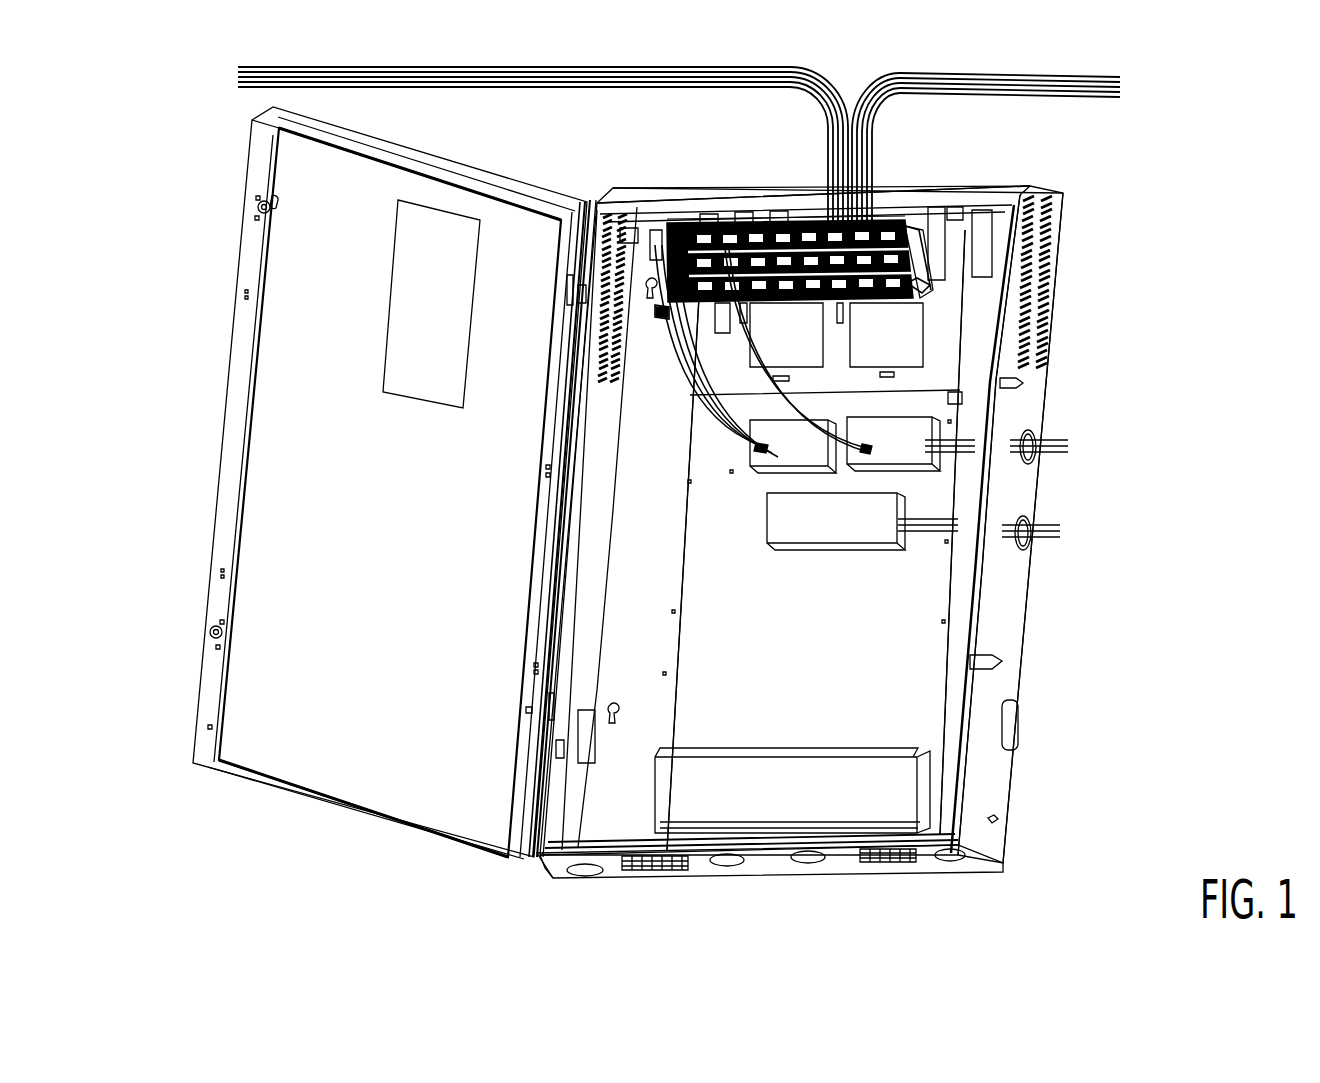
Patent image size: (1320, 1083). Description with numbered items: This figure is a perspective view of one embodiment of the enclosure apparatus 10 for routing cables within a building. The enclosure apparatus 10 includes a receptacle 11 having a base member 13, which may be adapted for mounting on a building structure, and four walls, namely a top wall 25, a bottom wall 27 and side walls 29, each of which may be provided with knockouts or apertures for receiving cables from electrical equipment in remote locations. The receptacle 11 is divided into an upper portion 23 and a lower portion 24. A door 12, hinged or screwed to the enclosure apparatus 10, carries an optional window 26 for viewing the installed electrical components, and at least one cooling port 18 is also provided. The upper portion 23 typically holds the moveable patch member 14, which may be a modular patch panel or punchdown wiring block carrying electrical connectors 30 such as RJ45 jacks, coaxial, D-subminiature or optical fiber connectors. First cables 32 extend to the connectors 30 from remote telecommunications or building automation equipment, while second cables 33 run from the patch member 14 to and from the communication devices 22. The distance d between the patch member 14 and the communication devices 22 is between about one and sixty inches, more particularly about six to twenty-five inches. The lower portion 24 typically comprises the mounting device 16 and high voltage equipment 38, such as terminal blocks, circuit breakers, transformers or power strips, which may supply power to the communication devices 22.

The enclosure apparatus 10 is at (1090, 191).
The receptacle 11 is at (528, 873).
The door 12 is at (322, 470).
The base member 13 is at (578, 640).
The moveable patch member 14 is at (917, 267).
The mounting device 16 is at (715, 492).
The cooling port 18 is at (920, 870).
The communication devices 22 is at (905, 450).
The upper portion 23 is at (1238, 190).
The lower portion 24 is at (1211, 535).
The top wall 25 is at (790, 185).
The window 26 is at (412, 288).
The bottom wall 27 is at (740, 872).
The side walls 29 is at (990, 800).
The electrical connectors 30 is at (728, 240).
The first cables 32 is at (300, 68).
The second cables 33 is at (680, 380).
The high voltage equipment 38 is at (912, 777).
The distance d is at (1057, 290).